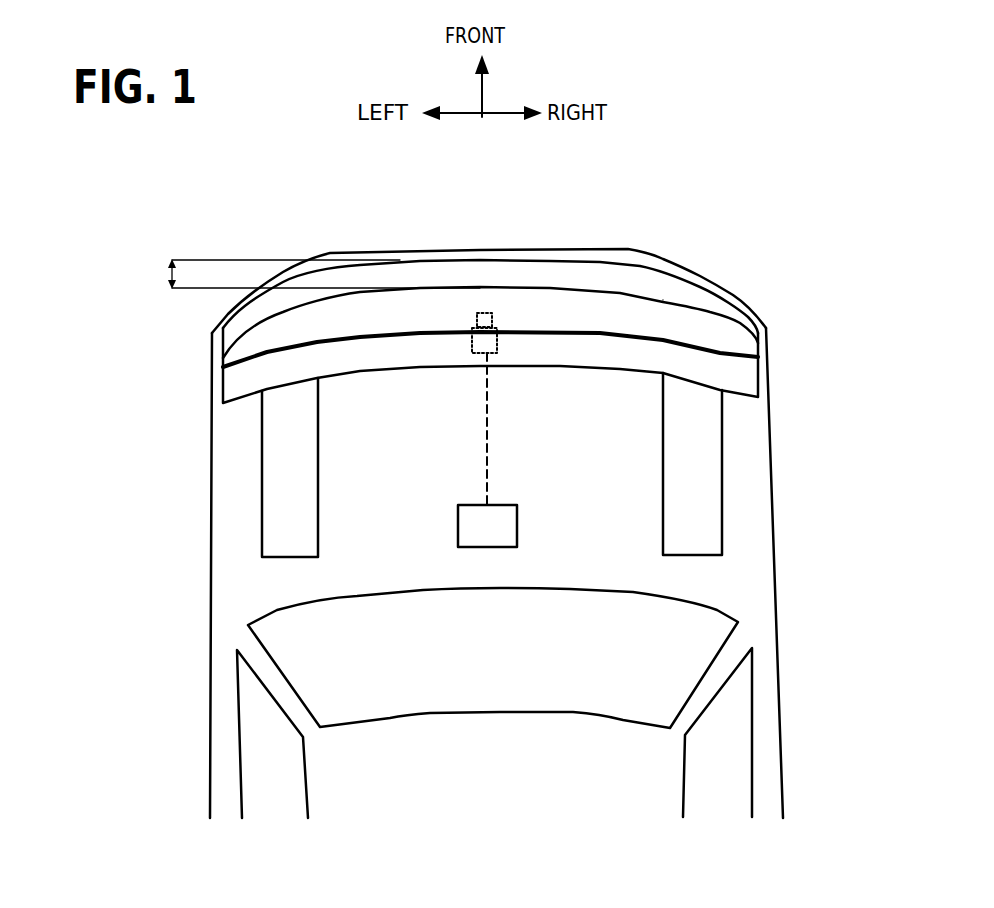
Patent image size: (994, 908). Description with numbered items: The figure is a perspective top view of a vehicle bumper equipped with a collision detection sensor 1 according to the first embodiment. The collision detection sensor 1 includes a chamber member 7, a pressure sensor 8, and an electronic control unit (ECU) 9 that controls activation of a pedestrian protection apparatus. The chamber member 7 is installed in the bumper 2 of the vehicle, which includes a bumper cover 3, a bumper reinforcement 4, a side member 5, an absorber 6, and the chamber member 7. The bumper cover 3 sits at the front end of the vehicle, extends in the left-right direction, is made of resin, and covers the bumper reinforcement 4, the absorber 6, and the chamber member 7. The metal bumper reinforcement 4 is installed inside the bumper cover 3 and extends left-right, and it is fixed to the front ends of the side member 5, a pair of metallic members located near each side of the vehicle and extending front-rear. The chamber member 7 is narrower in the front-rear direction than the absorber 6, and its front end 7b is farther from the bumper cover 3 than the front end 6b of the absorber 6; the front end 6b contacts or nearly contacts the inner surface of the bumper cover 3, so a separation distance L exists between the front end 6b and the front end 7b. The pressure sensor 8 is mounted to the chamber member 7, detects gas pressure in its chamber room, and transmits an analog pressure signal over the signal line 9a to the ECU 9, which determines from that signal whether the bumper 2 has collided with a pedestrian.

The collision detection sensor 1 is at (620, 193).
The bumper 2 is at (493, 292).
The bumper cover 3 is at (522, 248).
The bumper reinforcement 4 is at (758, 375).
The side member 5 is at (262, 527).
The absorber 6 is at (504, 287).
The front end of absorber 6b is at (628, 257).
The chamber member 7 is at (764, 349).
The front end of chamber member 7b is at (664, 298).
The pressure sensor 8 is at (473, 333).
The electronic control unit (ECU) 9 is at (517, 509).
The signal line 9a is at (490, 450).